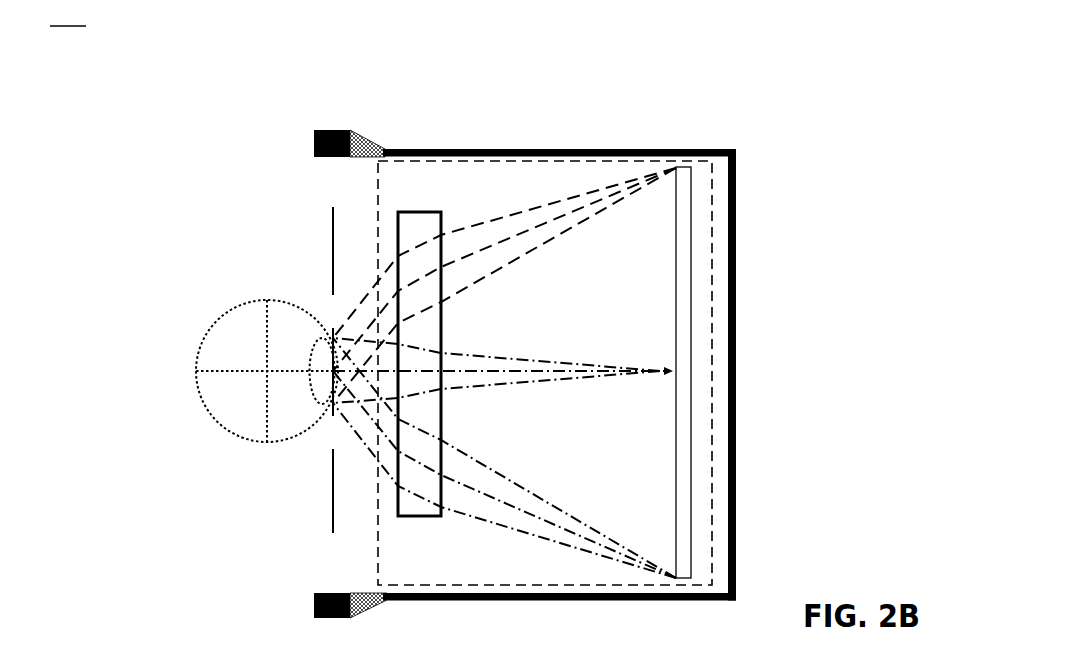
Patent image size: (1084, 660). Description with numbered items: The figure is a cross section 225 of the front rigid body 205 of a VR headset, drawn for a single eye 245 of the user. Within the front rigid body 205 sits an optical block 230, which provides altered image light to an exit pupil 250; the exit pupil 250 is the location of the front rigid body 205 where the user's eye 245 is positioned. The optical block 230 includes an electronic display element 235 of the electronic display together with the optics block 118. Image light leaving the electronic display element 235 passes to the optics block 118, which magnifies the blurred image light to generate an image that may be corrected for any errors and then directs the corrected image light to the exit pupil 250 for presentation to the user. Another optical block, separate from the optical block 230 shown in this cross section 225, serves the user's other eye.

The cross section 225 is at (68, 16).
The front rigid body 205 is at (703, 146).
The optics block 118 is at (396, 224).
The electronic display element 235 is at (696, 284).
The eye 245 is at (227, 303).
The optical block 230 is at (376, 493).
The exit pupil 250 is at (322, 511).